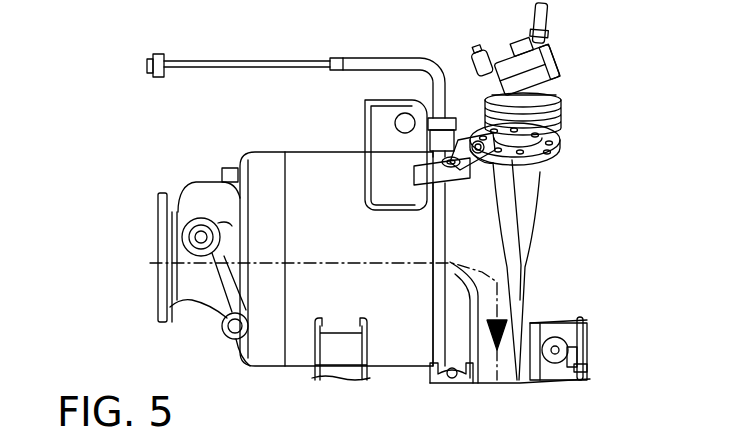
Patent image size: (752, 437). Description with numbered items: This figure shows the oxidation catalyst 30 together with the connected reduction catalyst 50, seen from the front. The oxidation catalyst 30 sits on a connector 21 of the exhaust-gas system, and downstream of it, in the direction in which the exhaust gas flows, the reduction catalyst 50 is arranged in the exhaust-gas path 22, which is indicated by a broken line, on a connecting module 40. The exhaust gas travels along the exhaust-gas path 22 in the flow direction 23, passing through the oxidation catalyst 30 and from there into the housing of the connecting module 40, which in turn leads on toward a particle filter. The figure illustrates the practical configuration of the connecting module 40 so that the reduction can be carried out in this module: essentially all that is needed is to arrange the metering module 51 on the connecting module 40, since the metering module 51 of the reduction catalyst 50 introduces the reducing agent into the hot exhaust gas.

The connector 21 is at (165, 300).
The exhaust-gas path 22 is at (482, 272).
The flow direction 23 is at (497, 317).
The oxidation catalyst 30 is at (308, 173).
The connecting module 40 is at (518, 223).
The reduction catalyst 50 is at (498, 205).
The metering module 51 is at (531, 127).